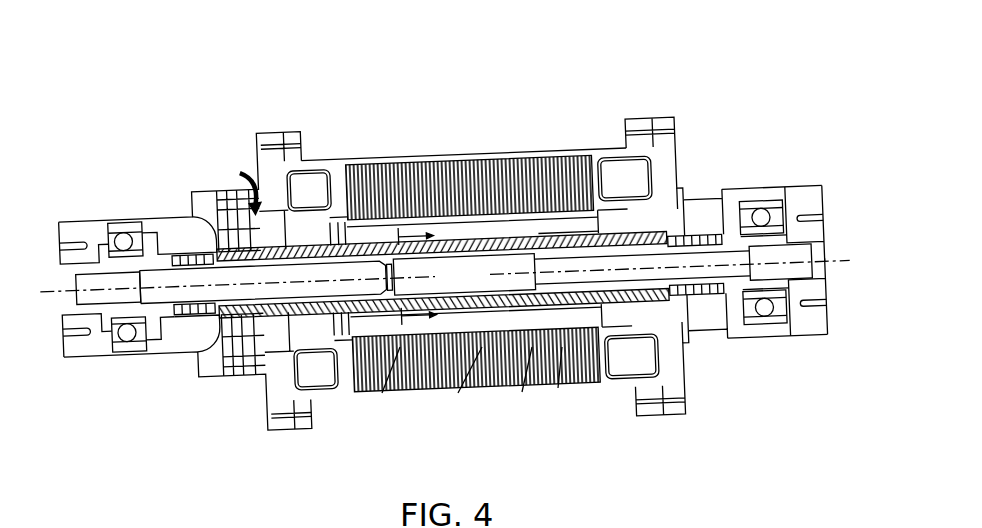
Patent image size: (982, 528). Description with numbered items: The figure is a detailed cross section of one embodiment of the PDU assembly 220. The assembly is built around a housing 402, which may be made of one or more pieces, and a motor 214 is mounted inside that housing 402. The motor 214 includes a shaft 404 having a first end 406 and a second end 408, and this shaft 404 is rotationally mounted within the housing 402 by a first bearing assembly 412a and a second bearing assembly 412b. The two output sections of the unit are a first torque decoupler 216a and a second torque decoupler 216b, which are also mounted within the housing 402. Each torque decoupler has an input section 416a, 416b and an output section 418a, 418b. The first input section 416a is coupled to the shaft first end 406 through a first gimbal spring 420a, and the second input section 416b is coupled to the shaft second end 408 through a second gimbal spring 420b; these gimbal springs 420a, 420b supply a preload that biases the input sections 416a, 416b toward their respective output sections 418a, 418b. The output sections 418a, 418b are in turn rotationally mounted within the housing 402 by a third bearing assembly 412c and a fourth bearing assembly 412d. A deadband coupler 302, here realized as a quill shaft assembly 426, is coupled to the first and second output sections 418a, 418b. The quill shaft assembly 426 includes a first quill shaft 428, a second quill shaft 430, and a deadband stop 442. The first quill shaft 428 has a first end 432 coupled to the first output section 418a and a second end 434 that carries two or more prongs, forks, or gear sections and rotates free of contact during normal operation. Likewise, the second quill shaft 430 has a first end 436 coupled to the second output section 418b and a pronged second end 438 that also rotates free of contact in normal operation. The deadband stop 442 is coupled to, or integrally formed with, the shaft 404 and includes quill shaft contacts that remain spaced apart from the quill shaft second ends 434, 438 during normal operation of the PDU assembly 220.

The PDU assembly 220 is at (436, 226).
The first torque decoupler 216a is at (183, 285).
The second torque decoupler 216b is at (775, 218).
The first bearing assembly 412a is at (289, 271).
The second bearing assembly 412b is at (608, 246).
The third bearing assembly 412c is at (84, 264).
The fourth bearing assembly 412d is at (815, 228).
The shaft 404 is at (367, 234).
The motor 214 is at (473, 251).
The deadband coupler 302 is at (442, 220).
The housing 402 is at (658, 241).
The first end 406 is at (185, 256).
The second end 408 is at (697, 250).
The deadband stop 442 is at (464, 274).
The first end 432 is at (59, 295).
The first end 436 is at (826, 276).
The input section 416a is at (152, 309).
The input section 416b is at (758, 306).
The output section 418a is at (121, 321).
The output section 418b is at (779, 306).
The first gimbal spring 420a is at (208, 341).
The second gimbal spring 420b is at (705, 308).
The first quill shaft 428 is at (313, 280).
The second end 434 is at (366, 393).
The quill shaft assembly 426 is at (455, 392).
The second end 438 is at (507, 392).
The second quill shaft 430 is at (567, 389).